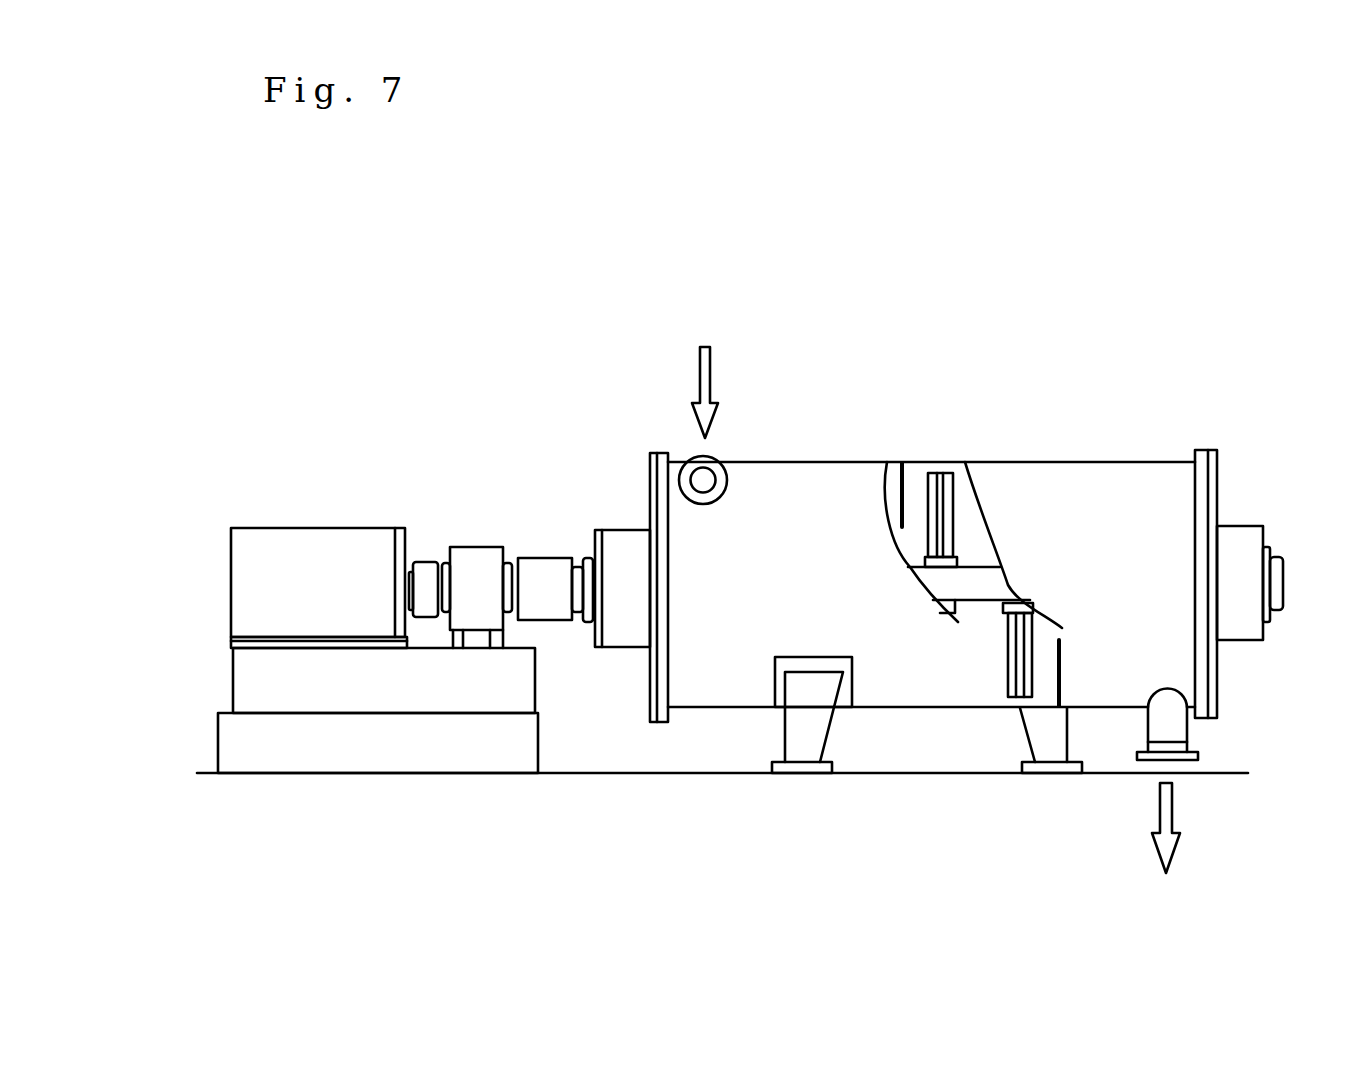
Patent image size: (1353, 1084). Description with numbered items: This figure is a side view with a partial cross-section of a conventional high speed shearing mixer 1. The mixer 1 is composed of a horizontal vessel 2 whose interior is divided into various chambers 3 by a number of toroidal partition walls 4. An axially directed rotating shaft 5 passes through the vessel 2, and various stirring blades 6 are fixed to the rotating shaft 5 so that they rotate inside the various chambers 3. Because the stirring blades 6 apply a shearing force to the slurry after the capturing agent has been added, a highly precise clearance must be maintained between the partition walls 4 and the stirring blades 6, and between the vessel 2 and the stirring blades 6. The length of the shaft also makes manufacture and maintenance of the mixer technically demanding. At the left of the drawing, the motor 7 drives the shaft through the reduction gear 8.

The high speed shearing mixer 1 is at (653, 440).
The horizontal vessel 2 is at (887, 708).
The chambers 3 is at (917, 493).
The toroidal partition walls 4 is at (902, 495).
The rotating shaft 5 is at (988, 590).
The stirring blades 6 is at (955, 527).
The motor 7 is at (316, 542).
The reduction gear 8 is at (487, 555).